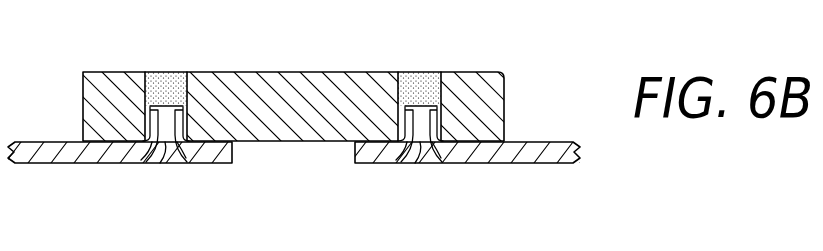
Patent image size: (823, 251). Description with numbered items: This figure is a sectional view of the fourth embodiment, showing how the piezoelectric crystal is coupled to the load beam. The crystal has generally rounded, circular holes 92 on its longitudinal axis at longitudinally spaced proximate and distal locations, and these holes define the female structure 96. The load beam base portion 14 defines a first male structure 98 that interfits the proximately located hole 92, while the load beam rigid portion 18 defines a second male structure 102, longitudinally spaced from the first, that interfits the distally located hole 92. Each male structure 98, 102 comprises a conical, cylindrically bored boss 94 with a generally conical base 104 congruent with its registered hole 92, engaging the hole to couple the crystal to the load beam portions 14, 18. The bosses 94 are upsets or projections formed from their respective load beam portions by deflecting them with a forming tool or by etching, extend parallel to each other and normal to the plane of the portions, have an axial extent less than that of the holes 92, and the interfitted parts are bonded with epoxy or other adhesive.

The load beam base portion 14 is at (53, 163).
The load beam rigid portion 18 is at (535, 163).
The hole 92 is at (175, 100).
The boss 94 is at (163, 164).
The female structure 96 is at (398, 90).
The first male structure 98 is at (145, 100).
The second male structure 102 is at (436, 128).
The conical base 104 is at (400, 163).